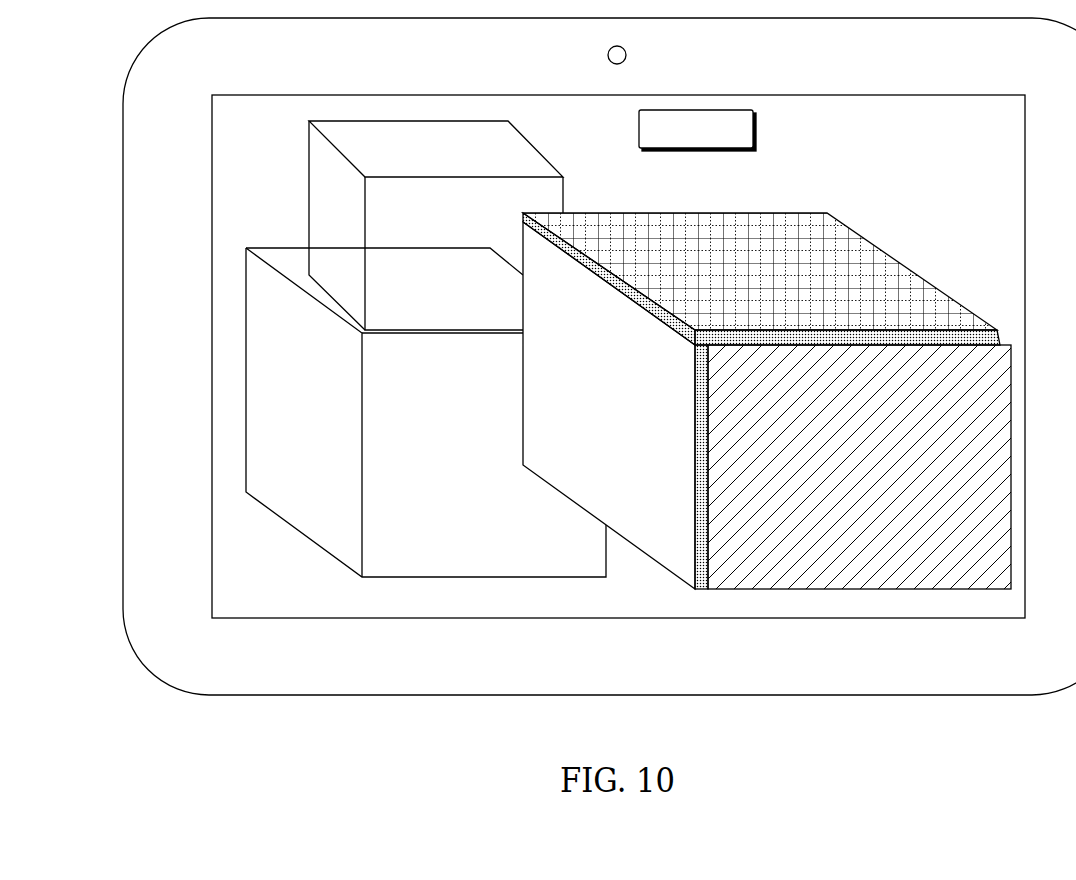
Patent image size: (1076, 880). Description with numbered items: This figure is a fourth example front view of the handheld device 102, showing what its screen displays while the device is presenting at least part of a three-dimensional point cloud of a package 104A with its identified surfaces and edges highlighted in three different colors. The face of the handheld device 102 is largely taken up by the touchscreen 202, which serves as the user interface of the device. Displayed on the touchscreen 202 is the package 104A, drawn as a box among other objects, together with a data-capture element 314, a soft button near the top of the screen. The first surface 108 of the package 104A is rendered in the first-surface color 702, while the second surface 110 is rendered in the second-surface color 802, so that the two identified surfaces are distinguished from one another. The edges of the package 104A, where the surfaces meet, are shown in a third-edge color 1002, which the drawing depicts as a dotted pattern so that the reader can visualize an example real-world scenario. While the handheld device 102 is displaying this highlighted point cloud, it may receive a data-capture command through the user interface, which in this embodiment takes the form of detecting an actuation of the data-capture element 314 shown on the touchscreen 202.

The handheld device 102 is at (632, 665).
The touchscreen 202 is at (988, 143).
The data-capture element 314 is at (639, 129).
The package 104A is at (673, 213).
The first surface 108 is at (777, 281).
The second surface 110 is at (872, 476).
The first-surface color 702 is at (855, 253).
The second-surface color 802 is at (728, 462).
The third-edge color 1002 is at (997, 330).